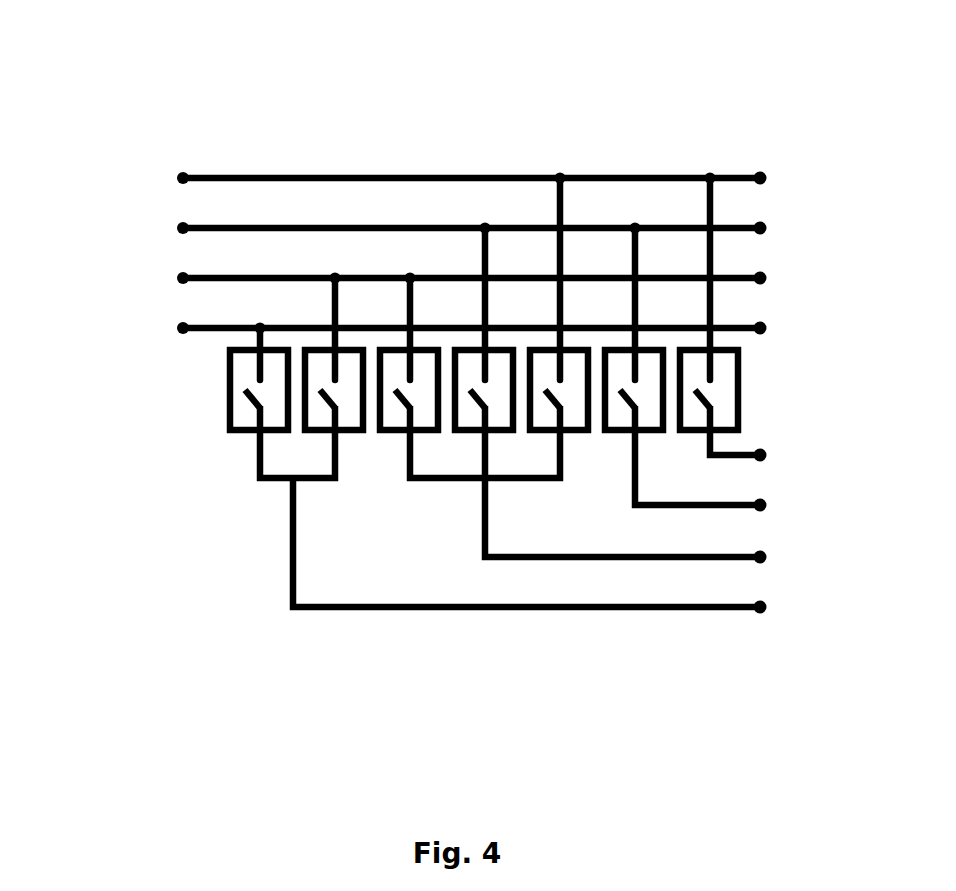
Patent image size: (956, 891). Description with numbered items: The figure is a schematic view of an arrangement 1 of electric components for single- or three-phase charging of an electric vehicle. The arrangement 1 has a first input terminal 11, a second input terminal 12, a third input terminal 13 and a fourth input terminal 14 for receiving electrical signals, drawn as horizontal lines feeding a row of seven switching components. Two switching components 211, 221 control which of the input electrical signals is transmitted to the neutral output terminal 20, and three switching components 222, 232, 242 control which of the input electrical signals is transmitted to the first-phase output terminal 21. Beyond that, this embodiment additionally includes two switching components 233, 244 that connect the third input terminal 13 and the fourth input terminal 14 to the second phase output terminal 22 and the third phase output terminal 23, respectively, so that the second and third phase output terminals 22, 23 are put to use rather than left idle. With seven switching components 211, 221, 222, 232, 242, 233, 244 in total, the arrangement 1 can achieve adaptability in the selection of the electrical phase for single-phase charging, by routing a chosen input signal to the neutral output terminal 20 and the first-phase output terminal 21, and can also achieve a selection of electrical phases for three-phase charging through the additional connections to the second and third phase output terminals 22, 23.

The arrangement 1 is at (720, 100).
The first input terminal 11 is at (183, 328).
The second input terminal 12 is at (183, 278).
The third input terminal 13 is at (183, 228).
The fourth input terminal 14 is at (183, 178).
The neutral output terminal 20 is at (760, 607).
The first-phase output terminal 21 is at (760, 557).
The second phase output terminal 22 is at (760, 505).
The third phase output terminal 23 is at (760, 455).
The switching component 211 is at (242, 432).
The switching component 221 is at (317, 432).
The switching component 222 is at (392, 432).
The switching component 232 is at (470, 432).
The switching component 242 is at (577, 432).
The switching component 233 is at (615, 432).
The switching component 244 is at (697, 432).